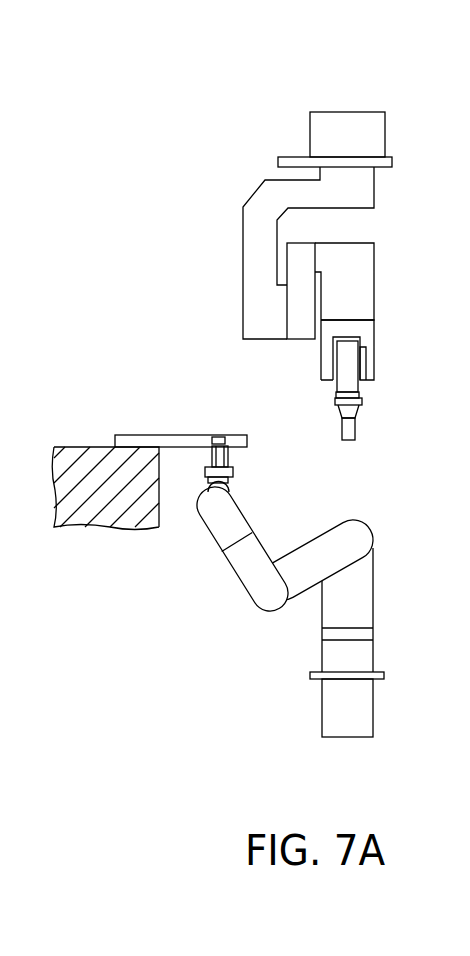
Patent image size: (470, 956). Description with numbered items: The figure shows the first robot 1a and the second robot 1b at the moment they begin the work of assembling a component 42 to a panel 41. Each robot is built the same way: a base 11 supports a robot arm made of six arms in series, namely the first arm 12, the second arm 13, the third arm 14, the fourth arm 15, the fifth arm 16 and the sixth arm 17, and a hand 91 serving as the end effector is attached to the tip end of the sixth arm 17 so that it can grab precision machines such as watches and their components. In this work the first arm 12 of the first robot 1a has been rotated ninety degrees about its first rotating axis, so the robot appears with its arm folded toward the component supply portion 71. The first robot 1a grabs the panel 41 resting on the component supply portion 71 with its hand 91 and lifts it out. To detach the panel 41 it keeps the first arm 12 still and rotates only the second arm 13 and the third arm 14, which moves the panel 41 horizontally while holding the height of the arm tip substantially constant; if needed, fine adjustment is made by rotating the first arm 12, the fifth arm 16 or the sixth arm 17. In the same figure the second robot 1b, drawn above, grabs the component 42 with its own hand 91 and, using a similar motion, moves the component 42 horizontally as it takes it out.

The first robot 1a is at (364, 755).
The second robot 1b is at (398, 91).
The base 11 is at (373, 137).
The first arm 12 is at (362, 192).
The second arm 13 is at (303, 328).
The third arm 14 is at (362, 270).
The fourth arm 15 is at (367, 325).
The fifth arm 16 is at (348, 360).
The sixth arm 17 is at (362, 400).
The panel 41 is at (138, 428).
The component 42 is at (360, 430).
The component supply portion 71 is at (80, 513).
The hand 91 is at (335, 402).